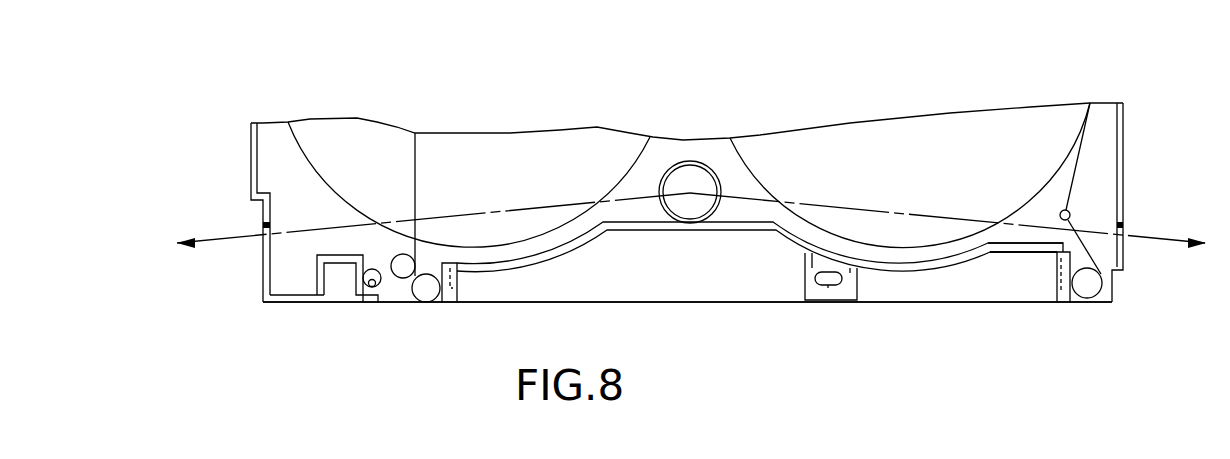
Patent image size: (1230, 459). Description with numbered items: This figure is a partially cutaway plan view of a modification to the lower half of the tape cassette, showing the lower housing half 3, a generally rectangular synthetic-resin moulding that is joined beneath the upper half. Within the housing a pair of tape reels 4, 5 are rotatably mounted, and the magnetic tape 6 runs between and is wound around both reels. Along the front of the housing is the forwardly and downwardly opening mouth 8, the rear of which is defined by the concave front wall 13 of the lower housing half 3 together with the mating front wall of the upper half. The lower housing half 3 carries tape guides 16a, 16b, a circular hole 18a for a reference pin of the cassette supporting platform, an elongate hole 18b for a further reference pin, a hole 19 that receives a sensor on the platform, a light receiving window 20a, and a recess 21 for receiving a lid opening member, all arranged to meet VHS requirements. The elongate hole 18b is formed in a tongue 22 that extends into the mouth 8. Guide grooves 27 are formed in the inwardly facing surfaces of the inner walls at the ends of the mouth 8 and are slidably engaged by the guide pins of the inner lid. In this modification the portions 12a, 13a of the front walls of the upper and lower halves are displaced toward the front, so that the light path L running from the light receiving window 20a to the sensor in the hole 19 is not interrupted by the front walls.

The lower housing half 3 is at (250, 168).
The tape reel 4 is at (945, 135).
The tape reel 5 is at (367, 132).
The magnetic tape 6 is at (767, 302).
The mouth 8 is at (707, 262).
The front wall 13 is at (945, 262).
The portion of front wall 13a is at (1030, 253).
The portion of front wall 12a is at (1011, 303).
The tape guide 16a is at (1093, 290).
The tape guide 16b is at (428, 295).
The circular hole 18a is at (377, 291).
The elongate hole 18b is at (830, 284).
The hole 19 is at (694, 176).
The light receiving window 20a is at (263, 242).
The recess 21 is at (327, 285).
The tongue 22 is at (843, 297).
The guide groove 27 is at (457, 288).
The light path L is at (488, 213).